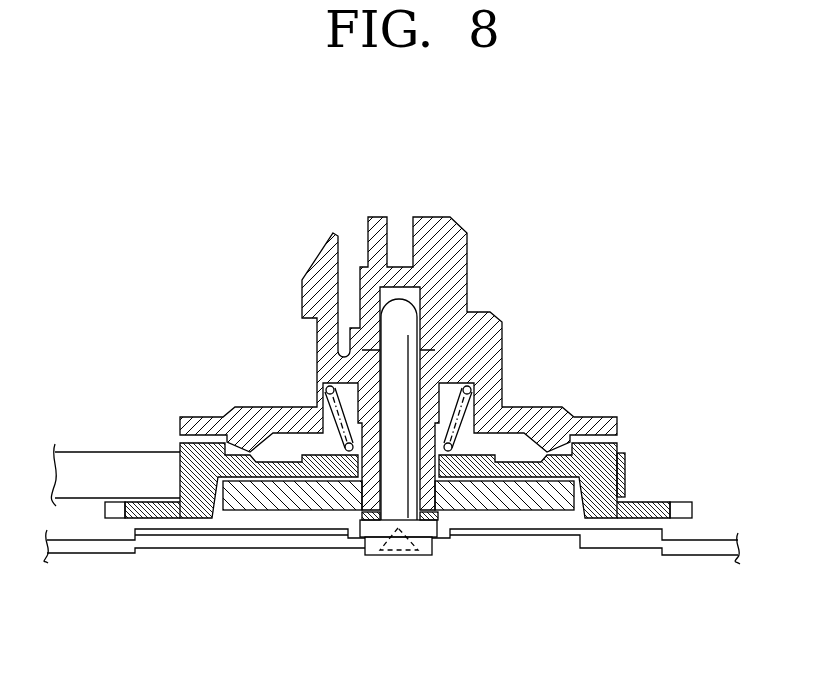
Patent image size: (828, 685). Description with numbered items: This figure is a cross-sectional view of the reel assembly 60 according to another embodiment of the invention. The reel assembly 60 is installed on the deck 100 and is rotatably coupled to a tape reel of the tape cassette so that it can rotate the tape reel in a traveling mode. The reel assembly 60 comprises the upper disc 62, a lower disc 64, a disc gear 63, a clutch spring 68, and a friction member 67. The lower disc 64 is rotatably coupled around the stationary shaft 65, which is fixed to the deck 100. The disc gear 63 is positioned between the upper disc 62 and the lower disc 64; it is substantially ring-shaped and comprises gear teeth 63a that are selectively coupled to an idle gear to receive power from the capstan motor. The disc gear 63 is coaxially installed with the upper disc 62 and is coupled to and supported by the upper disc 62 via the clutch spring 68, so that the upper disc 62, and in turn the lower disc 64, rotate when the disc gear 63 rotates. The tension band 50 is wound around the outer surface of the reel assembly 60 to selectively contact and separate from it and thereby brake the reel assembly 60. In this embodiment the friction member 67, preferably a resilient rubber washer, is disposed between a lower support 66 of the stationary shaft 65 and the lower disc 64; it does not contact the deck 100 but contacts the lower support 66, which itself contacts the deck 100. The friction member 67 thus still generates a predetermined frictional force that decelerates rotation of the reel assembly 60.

The reel assembly 60 is at (518, 186).
The upper disc 62 is at (502, 320).
The disc gear 63 is at (618, 445).
The gear teeth 63a is at (658, 503).
The lower disc 64 is at (538, 503).
The stationary shaft 65 is at (393, 477).
The lower support 66 is at (382, 538).
The friction member 67 is at (440, 516).
The clutch spring 68 is at (477, 383).
The tension band 50 is at (112, 456).
The deck 100 is at (225, 537).